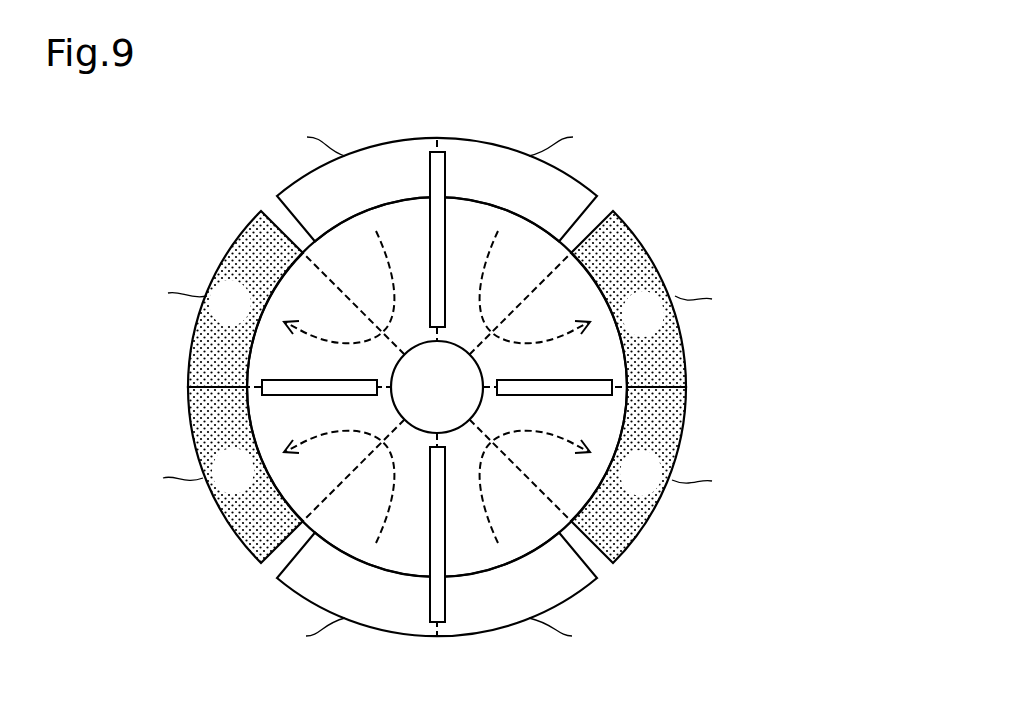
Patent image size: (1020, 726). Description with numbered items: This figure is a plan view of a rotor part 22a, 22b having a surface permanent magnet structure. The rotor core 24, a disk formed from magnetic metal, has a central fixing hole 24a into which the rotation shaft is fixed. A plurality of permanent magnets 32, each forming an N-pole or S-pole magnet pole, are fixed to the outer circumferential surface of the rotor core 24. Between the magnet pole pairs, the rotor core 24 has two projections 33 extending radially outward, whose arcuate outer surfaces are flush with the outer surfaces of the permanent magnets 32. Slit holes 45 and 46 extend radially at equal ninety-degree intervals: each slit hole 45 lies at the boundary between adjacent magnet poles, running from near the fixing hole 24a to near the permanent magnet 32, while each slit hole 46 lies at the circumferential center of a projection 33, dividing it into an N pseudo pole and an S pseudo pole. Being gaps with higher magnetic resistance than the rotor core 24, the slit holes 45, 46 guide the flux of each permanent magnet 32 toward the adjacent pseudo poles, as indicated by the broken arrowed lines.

The rotor part 22a is at (703, 186).
The rotor part 22b is at (696, 197).
The rotor core 24 is at (582, 293).
The fixing hole 24a is at (411, 345).
The permanent magnet 32 is at (200, 408).
The projection 33 is at (426, 143).
The slit hole 45 is at (286, 394).
The slit hole 46 is at (437, 236).